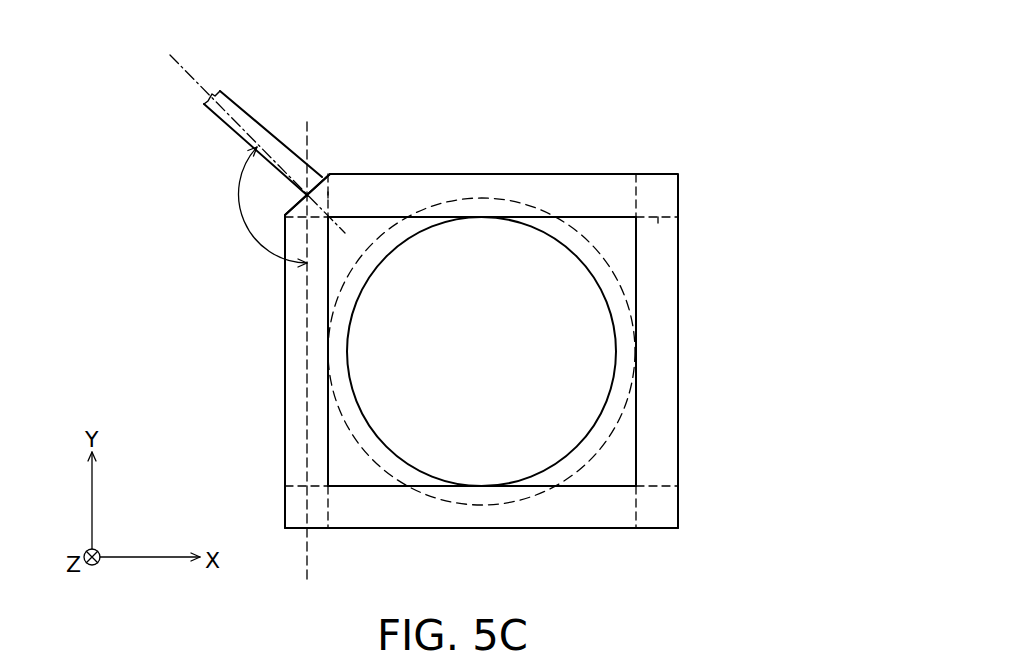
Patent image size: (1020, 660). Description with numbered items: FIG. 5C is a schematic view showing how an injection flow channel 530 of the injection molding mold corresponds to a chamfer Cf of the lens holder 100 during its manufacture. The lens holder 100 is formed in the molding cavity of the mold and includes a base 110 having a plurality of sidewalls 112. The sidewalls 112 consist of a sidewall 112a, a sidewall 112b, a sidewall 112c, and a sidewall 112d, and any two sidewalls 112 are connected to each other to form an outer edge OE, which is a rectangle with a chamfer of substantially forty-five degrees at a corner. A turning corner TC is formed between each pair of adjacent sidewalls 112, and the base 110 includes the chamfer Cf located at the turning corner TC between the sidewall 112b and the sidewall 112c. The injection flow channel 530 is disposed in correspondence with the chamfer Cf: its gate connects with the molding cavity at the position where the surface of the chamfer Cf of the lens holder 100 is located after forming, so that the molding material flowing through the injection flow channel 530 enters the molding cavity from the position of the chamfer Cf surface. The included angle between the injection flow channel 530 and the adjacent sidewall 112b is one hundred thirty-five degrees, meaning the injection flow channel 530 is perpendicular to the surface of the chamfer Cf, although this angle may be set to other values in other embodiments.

The base 110 is at (676, 143).
The sidewalls 112 is at (481, 343).
The sidewall 112a is at (572, 513).
The sidewall 112b is at (293, 371).
The sidewall 112c is at (555, 192).
The sidewall 112d is at (660, 353).
The lens holder 100 is at (712, 517).
The injection flow channel 530 is at (242, 118).
The chamfer Cf is at (320, 175).
The outer edge OE is at (418, 170).
The turning corner TC is at (333, 193).